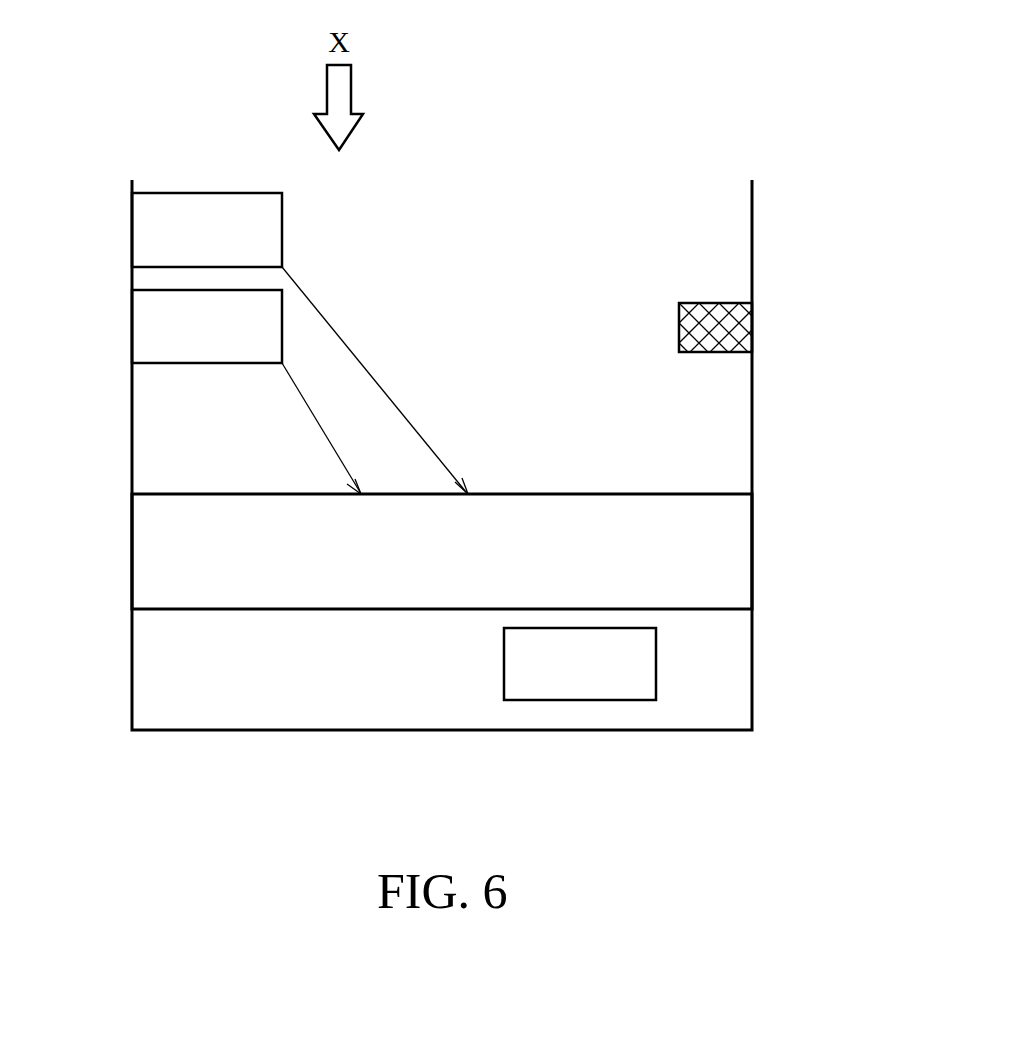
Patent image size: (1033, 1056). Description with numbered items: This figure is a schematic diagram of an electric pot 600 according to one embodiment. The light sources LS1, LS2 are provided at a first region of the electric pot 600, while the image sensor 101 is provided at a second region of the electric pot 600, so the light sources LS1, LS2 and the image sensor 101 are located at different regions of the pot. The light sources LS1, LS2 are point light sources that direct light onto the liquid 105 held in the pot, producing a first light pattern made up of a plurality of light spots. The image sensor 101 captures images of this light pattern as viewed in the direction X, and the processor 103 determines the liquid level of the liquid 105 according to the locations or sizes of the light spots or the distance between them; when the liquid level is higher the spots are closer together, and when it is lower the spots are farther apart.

The electric pot 600 is at (614, 90).
The light source LS1 is at (141, 213).
The light source LS2 is at (141, 310).
The image sensor 101 is at (742, 323).
The processor 103 is at (629, 700).
The liquid 105 is at (143, 550).